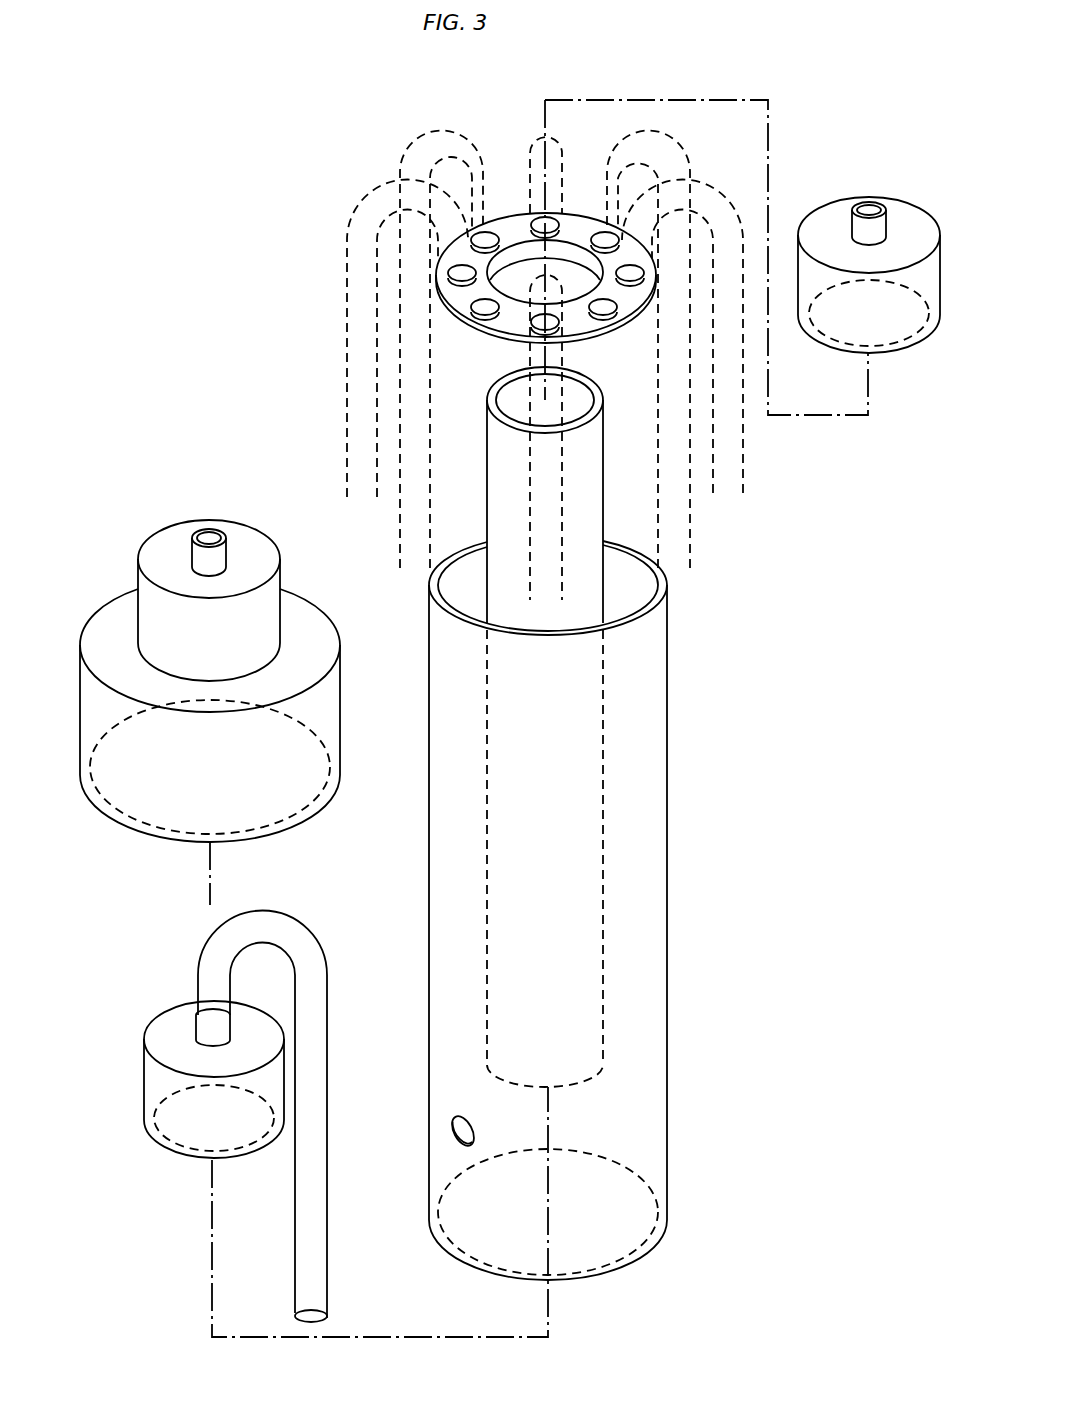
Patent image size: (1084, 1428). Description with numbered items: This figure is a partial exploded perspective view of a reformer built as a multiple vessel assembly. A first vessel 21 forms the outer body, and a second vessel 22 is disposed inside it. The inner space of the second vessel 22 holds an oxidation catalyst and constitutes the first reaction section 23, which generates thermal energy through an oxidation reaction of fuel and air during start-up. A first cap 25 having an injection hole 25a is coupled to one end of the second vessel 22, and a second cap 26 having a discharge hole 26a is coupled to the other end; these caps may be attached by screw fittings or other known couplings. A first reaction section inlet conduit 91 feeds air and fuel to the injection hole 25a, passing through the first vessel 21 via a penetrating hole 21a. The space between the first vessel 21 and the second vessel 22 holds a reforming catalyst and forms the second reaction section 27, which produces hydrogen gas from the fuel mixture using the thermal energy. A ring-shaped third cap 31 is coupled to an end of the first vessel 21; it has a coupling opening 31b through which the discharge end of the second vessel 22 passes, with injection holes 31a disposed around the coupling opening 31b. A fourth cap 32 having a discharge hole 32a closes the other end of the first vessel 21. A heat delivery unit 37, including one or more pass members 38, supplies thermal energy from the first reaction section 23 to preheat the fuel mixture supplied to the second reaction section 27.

The first vessel 21 is at (667, 1092).
The penetrating hole 21a is at (455, 1130).
The second vessel 22 is at (605, 908).
The first reaction section 23 is at (605, 956).
The first cap 25 is at (153, 1090).
The injection hole 25a is at (201, 1031).
The second cap 26 is at (828, 225).
The discharge hole 26a is at (882, 225).
The second reaction section 27 is at (667, 1027).
The third cap 31 is at (460, 293).
The injection hole 31a is at (606, 326).
The coupling opening 31b is at (530, 252).
The fourth cap 32 is at (322, 707).
The discharge hole 32a is at (218, 555).
The heat delivery unit 37 is at (343, 409).
The pass member 38 is at (690, 505).
The first reaction section inlet conduit 91 is at (322, 1256).